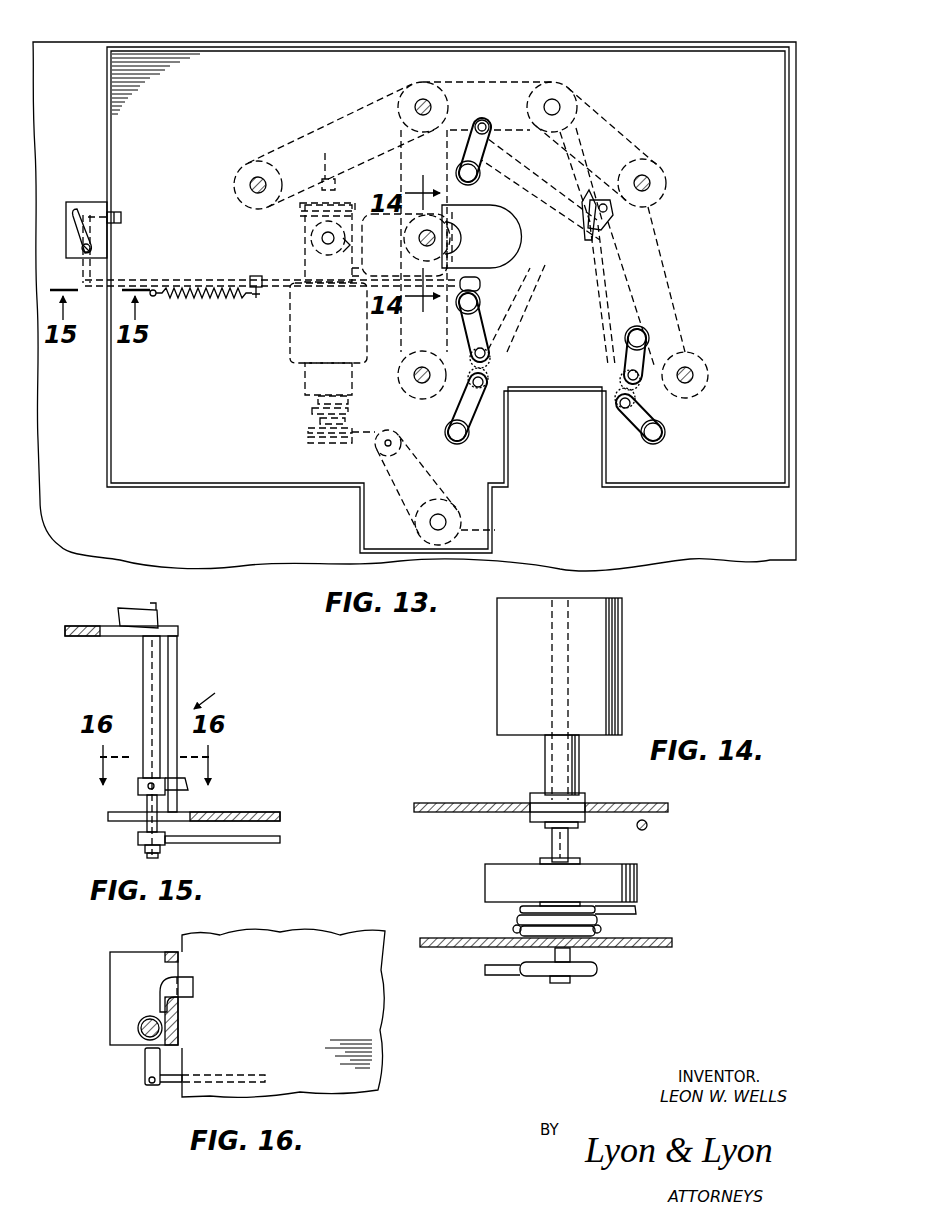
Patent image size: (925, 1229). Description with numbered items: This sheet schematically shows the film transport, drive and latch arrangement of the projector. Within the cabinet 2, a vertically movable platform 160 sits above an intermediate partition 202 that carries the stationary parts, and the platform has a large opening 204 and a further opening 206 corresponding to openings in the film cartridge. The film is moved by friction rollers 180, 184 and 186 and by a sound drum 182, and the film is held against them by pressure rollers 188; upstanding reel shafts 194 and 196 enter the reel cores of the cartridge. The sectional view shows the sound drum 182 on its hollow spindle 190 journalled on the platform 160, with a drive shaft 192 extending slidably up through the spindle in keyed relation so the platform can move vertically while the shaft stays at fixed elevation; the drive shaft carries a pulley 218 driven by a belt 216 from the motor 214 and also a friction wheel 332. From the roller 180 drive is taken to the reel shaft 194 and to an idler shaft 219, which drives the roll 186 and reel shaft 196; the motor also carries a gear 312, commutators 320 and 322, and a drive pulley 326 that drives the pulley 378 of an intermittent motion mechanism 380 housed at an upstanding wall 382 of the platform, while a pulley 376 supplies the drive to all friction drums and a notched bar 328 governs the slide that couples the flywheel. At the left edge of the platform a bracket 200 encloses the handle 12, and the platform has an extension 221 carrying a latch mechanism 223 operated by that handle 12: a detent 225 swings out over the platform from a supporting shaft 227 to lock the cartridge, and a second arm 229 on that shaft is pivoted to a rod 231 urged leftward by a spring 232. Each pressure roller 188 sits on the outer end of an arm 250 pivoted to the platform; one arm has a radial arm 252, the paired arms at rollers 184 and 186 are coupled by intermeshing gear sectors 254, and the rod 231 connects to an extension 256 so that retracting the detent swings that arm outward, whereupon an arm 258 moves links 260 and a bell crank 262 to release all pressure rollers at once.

In FIG. 13, the cabinet 2 is at (88, 555).
In FIG. 13, the handle 12 is at (76, 232).
In FIG. 15, the handle 12 is at (135, 618).
In FIG. 13, the platform 160 is at (655, 52).
In FIG. 14, the platform 160 is at (520, 805).
In FIG. 15, the platform 160 is at (252, 812).
In FIG. 16, the platform 160 is at (298, 945).
In FIG. 13, the friction roller 180 is at (415, 105).
In FIG. 14, the sound drum 182 is at (607, 690).
In FIG. 13, the friction roller 184 is at (418, 385).
In FIG. 13, the friction roller 186 is at (690, 385).
In FIG. 13, the pressure rollers 188 is at (476, 180).
In FIG. 13, the hollow spindle 190 is at (419, 240).
In FIG. 14, the hollow spindle 190 is at (578, 792).
In FIG. 14, the drive shaft 192 is at (556, 852).
In FIG. 13, the reel shaft 194 is at (250, 182).
In FIG. 13, the reel shaft 196 is at (650, 181).
In FIG. 13, the bracket 200 is at (100, 212).
In FIG. 14, the intermediate partition 202 is at (500, 940).
In FIG. 13, the large opening 204 is at (600, 462).
In FIG. 13, the opening 206 is at (495, 213).
In FIG. 13, the motor 214 is at (290, 346).
In FIG. 13, the belt 216 is at (380, 198).
In FIG. 14, the belt 216 is at (600, 926).
In FIG. 13, the pulley 218 is at (450, 240).
In FIG. 14, the pulley 218 is at (585, 940).
In FIG. 13, the idler shaft 219 is at (560, 107).
In FIG. 15, the extension 221 is at (165, 634).
In FIG. 15, the latch mechanism 223 is at (220, 694).
In FIG. 13, the detent 225 is at (121, 216).
In FIG. 15, the detent 225 is at (190, 790).
In FIG. 16, the detent 225 is at (195, 987).
In FIG. 15, the supporting shaft 227 is at (147, 690).
In FIG. 16, the supporting shaft 227 is at (148, 1016).
In FIG. 15, the second arm 229 is at (138, 838).
In FIG. 16, the second arm 229 is at (145, 1070).
In FIG. 13, the rod 231 is at (183, 280).
In FIG. 14, the rod 231 is at (648, 826).
In FIG. 15, the rod 231 is at (232, 843).
In FIG. 16, the rod 231 is at (180, 1085).
In FIG. 13, the spring 232 is at (216, 300).
In FIG. 13, the arm 250 is at (480, 148).
In FIG. 13, the radial arm 252 is at (488, 126).
In FIG. 13, the intermeshing gear sectors 254 is at (492, 368).
In FIG. 13, the extension 256 is at (482, 284).
In FIG. 13, the arm 258 is at (512, 348).
In FIG. 13, the links 260 is at (575, 228).
In FIG. 13, the bell crank 262 is at (612, 224).
In FIG. 13, the gear 312 is at (305, 221).
In FIG. 13, the commutator 320 is at (316, 404).
In FIG. 13, the commutator 322 is at (318, 422).
In FIG. 13, the drive pulley 326 is at (335, 440).
In FIG. 13, the bar 328 is at (325, 170).
In FIG. 14, the friction wheel 332 is at (637, 885).
In FIG. 13, the pulley 376 is at (340, 247).
In FIG. 13, the pulley 378 is at (463, 528).
In FIG. 13, the intermittent motion mechanism 380 is at (372, 532).
In FIG. 13, the upstanding wall 382 is at (384, 460).